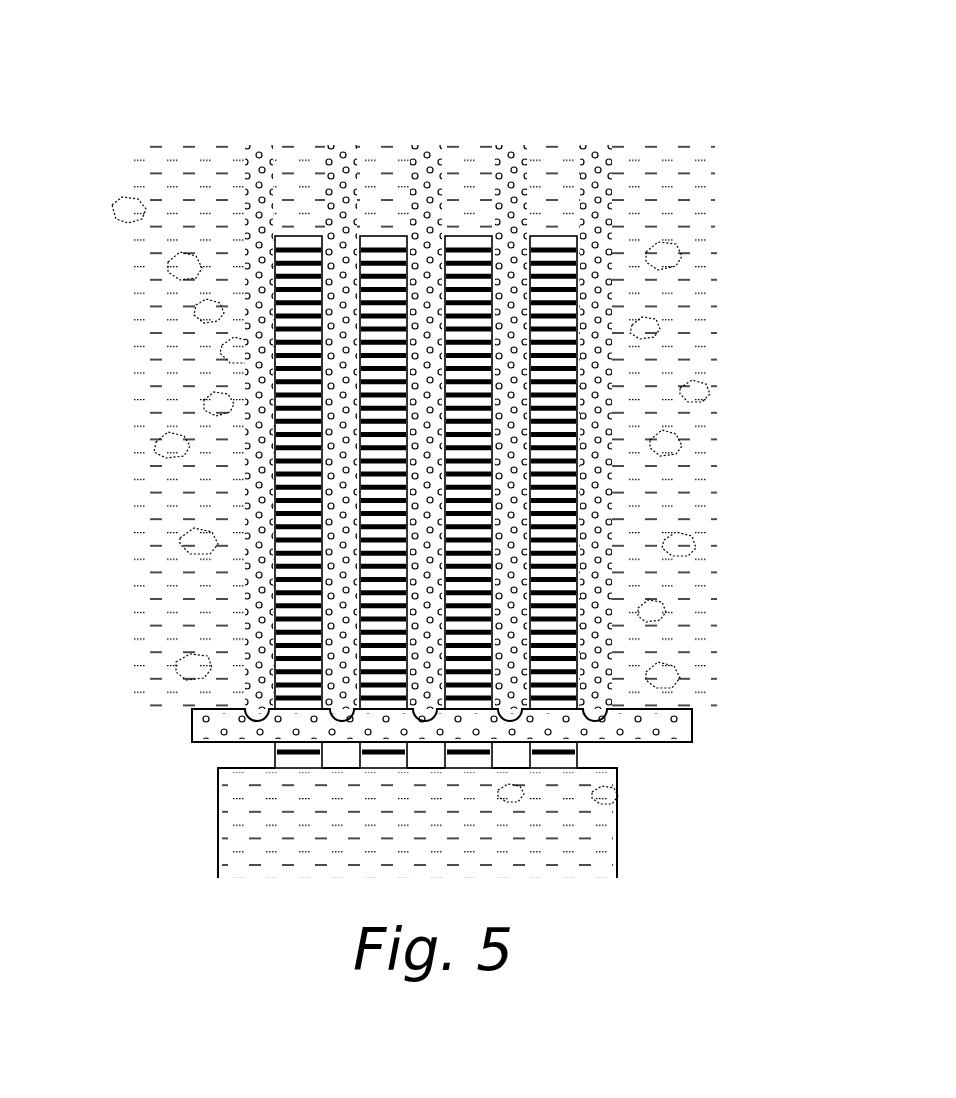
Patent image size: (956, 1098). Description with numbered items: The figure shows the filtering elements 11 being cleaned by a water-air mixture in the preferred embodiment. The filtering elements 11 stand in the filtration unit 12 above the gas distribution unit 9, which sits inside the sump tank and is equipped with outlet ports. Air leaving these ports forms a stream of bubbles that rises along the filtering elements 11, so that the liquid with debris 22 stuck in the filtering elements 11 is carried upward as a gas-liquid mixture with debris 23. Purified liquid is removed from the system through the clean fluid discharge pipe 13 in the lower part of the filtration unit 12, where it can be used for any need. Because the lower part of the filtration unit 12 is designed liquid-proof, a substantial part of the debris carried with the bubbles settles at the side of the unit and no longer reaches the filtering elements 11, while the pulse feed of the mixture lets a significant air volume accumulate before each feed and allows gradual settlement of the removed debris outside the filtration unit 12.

The gas distribution unit 9 is at (657, 708).
The filtering elements 11 is at (295, 557).
The filtration unit 12 is at (222, 822).
The clean fluid discharge pipe 13 is at (480, 858).
The liquid with debris 22 is at (178, 617).
The gas-liquid mixture with debris 23 is at (597, 203).